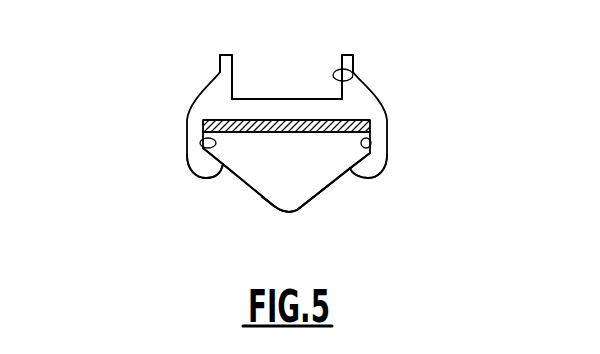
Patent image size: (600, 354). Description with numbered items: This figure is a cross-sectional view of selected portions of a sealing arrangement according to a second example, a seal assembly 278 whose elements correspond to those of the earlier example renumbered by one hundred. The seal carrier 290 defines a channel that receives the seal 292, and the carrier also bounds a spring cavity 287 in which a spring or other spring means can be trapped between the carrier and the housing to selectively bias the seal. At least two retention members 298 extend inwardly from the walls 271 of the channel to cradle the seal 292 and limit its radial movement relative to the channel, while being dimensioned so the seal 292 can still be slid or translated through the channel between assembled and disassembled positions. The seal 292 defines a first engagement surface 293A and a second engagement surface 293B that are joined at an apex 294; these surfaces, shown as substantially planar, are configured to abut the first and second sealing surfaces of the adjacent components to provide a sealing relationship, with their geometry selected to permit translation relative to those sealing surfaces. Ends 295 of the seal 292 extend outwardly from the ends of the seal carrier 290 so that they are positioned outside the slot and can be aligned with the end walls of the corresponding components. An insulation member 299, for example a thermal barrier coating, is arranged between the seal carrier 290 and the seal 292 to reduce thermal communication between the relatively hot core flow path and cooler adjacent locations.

The seal assembly 278 is at (131, 42).
The seal carrier 290 is at (220, 75).
The spring cavity 287 is at (353, 77).
The insulation member 299 is at (370, 125).
The walls of channel 271 is at (200, 139).
The retention members 298 is at (201, 175).
The first engagement surface 293A is at (238, 183).
The second engagement surface 293B is at (330, 183).
The ends of seal 295 is at (276, 193).
The apex 294 is at (287, 212).
The seal 292 is at (311, 200).